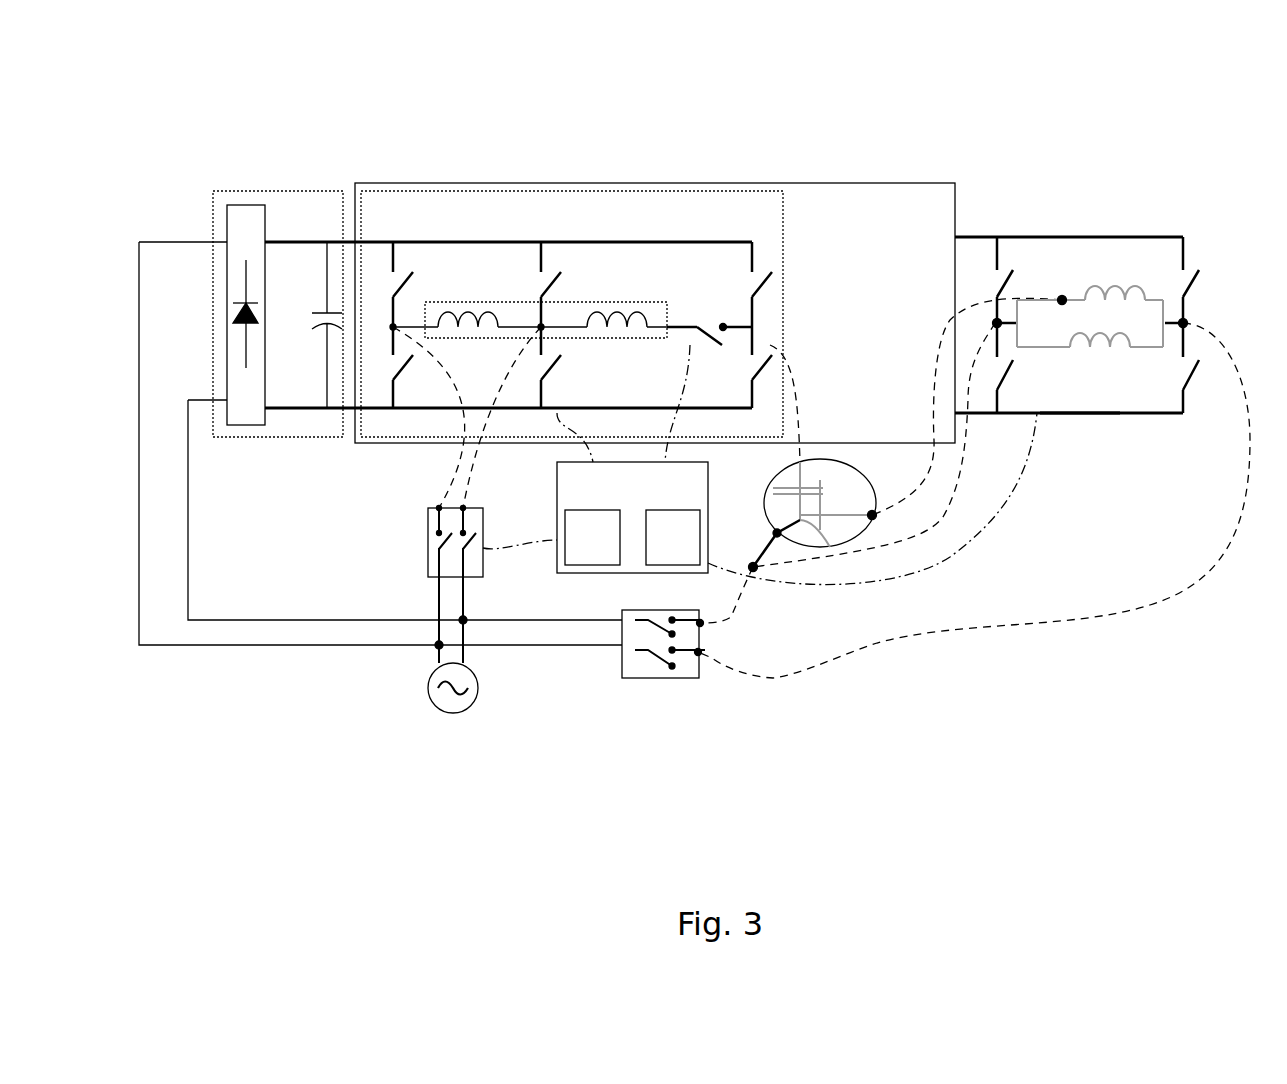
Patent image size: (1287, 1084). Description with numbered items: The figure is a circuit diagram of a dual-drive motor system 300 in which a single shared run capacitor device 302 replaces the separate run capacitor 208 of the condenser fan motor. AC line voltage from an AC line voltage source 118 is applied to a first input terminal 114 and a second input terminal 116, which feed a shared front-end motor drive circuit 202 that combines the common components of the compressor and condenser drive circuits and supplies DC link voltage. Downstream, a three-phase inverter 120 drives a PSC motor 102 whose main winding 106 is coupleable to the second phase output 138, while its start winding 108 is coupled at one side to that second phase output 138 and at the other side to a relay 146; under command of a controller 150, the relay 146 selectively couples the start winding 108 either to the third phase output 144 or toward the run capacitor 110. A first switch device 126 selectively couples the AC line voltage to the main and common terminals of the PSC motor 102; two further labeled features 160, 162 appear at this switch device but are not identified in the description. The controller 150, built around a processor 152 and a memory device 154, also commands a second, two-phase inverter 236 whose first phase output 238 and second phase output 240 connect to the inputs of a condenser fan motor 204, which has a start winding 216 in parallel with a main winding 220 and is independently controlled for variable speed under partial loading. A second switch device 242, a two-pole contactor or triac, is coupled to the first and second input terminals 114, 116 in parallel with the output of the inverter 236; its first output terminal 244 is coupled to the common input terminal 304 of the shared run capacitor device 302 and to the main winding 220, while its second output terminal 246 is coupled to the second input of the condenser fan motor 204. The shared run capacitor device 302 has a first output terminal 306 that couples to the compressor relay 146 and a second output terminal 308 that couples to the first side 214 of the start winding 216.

The dual-drive motor system 300 is at (280, 95).
The shared front-end motor drive circuit 202 is at (228, 194).
The inverter 120 is at (425, 190).
The PSC motor 102 is at (655, 302).
The main winding 106 is at (465, 314).
The start winding 108 is at (618, 318).
The second phase output 138 is at (547, 337).
The third phase output 144 is at (756, 326).
The relay 146 is at (723, 344).
The run capacitor 110 is at (826, 492).
The run capacitor 208 is at (843, 502).
The shared run capacitor device 302 is at (832, 548).
The common input terminal 304 is at (758, 570).
The first output terminal 306 is at (800, 462).
The second output terminal 308 is at (875, 518).
The controller 150 is at (557, 471).
The processor 152 is at (592, 537).
The memory device 154 is at (673, 537).
The first switch device 126 is at (428, 516).
The control line 160 is at (437, 496).
The control line 162 is at (465, 488).
The first input terminal 114 is at (437, 606).
The second input terminal 116 is at (465, 655).
The AC line voltage source 118 is at (433, 690).
The condenser fan motor 204 is at (1150, 376).
The first side of start winding 214 is at (1075, 298).
The start winding 216 is at (1127, 292).
The main winding 220 is at (1107, 352).
The inverter 236 is at (1112, 413).
The first phase output 238 is at (995, 321).
The second phase output 240 is at (1186, 322).
The second switch device 242 is at (665, 680).
The first output terminal 244 is at (734, 616).
The second output terminal 246 is at (813, 664).